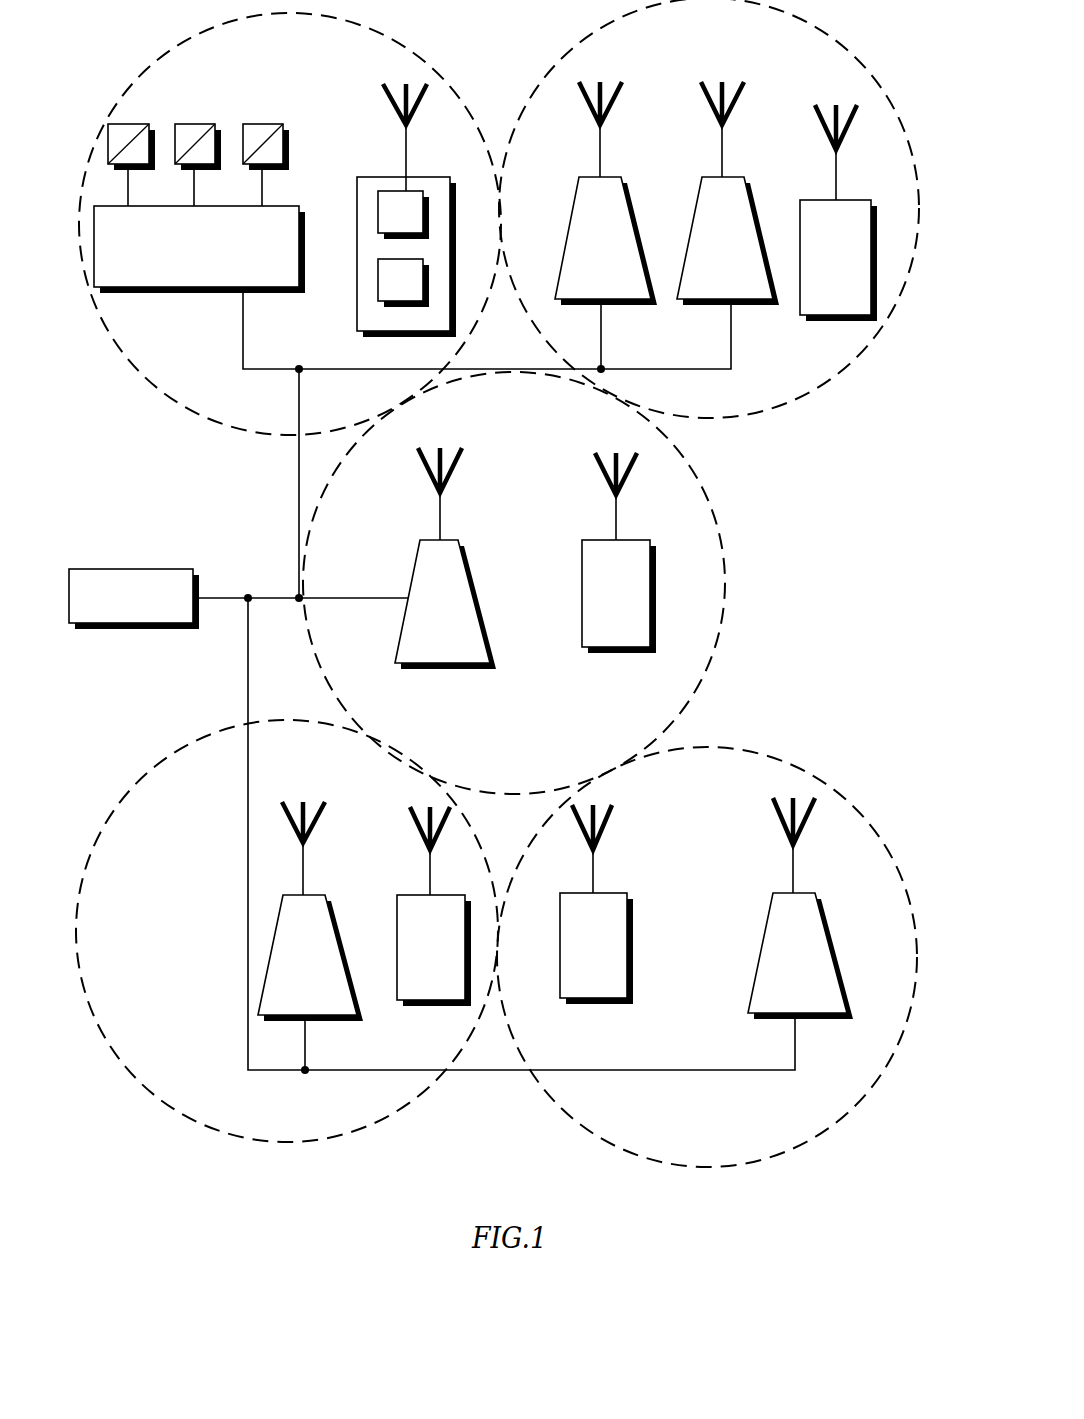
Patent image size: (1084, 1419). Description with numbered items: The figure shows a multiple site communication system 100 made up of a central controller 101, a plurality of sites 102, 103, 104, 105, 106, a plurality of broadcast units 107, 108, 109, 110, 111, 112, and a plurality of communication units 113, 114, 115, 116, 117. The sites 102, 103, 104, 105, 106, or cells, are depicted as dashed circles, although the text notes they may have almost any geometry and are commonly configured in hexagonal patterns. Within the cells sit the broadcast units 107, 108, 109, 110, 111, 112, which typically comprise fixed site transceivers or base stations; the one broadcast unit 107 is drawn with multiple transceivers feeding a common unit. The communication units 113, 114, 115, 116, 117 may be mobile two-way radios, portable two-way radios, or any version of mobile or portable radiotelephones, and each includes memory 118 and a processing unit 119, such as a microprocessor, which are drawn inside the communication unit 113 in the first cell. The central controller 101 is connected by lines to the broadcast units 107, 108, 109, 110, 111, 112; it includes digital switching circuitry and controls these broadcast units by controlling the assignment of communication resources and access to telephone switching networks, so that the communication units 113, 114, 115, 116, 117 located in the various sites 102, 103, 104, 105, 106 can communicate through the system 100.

The multiple site communication system 100 is at (494, 590).
The central controller 101 is at (127, 569).
The site 102 is at (358, 24).
The site 103 is at (840, 43).
The site 104 is at (705, 489).
The site 105 is at (160, 762).
The site 106 is at (825, 783).
The broadcast unit 107 is at (208, 293).
The broadcast unit 108 is at (591, 177).
The broadcast unit 109 is at (752, 205).
The broadcast unit 110 is at (473, 567).
The broadcast unit 111 is at (340, 927).
The broadcast unit 112 is at (833, 940).
The communication unit 113 is at (385, 226).
The communication unit 114 is at (877, 222).
The communication unit 115 is at (656, 570).
The communication unit 116 is at (397, 925).
The communication unit 117 is at (633, 913).
The memory 118 is at (401, 190).
The processing unit 119 is at (378, 282).